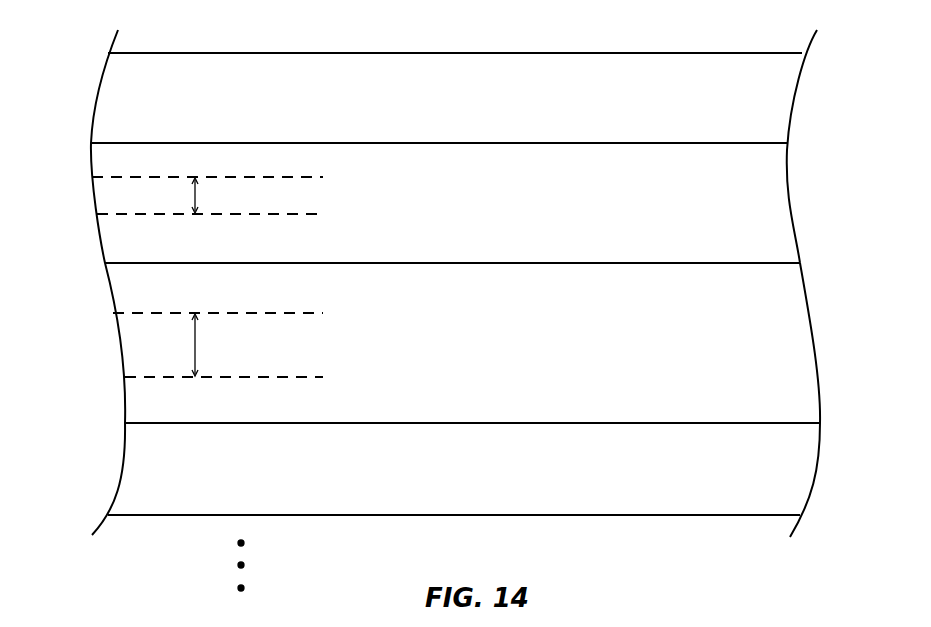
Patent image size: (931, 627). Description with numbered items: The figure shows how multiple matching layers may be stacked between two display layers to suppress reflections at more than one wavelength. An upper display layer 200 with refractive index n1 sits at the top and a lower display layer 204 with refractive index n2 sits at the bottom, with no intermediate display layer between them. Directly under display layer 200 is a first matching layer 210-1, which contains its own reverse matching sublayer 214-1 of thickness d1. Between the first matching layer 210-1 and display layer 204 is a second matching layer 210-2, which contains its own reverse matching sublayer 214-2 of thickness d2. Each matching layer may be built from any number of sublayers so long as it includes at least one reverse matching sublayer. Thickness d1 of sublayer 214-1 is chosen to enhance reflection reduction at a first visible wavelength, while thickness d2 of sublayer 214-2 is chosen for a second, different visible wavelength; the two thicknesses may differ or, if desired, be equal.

The display layer 200 is at (98, 91).
The display layer 204 is at (125, 465).
The first matching layer 210-1 is at (75, 143).
The second matching layer 210-2 is at (75, 263).
The reverse matching sublayer 214-1 is at (327, 177).
The reverse matching sublayer 214-2 is at (327, 313).